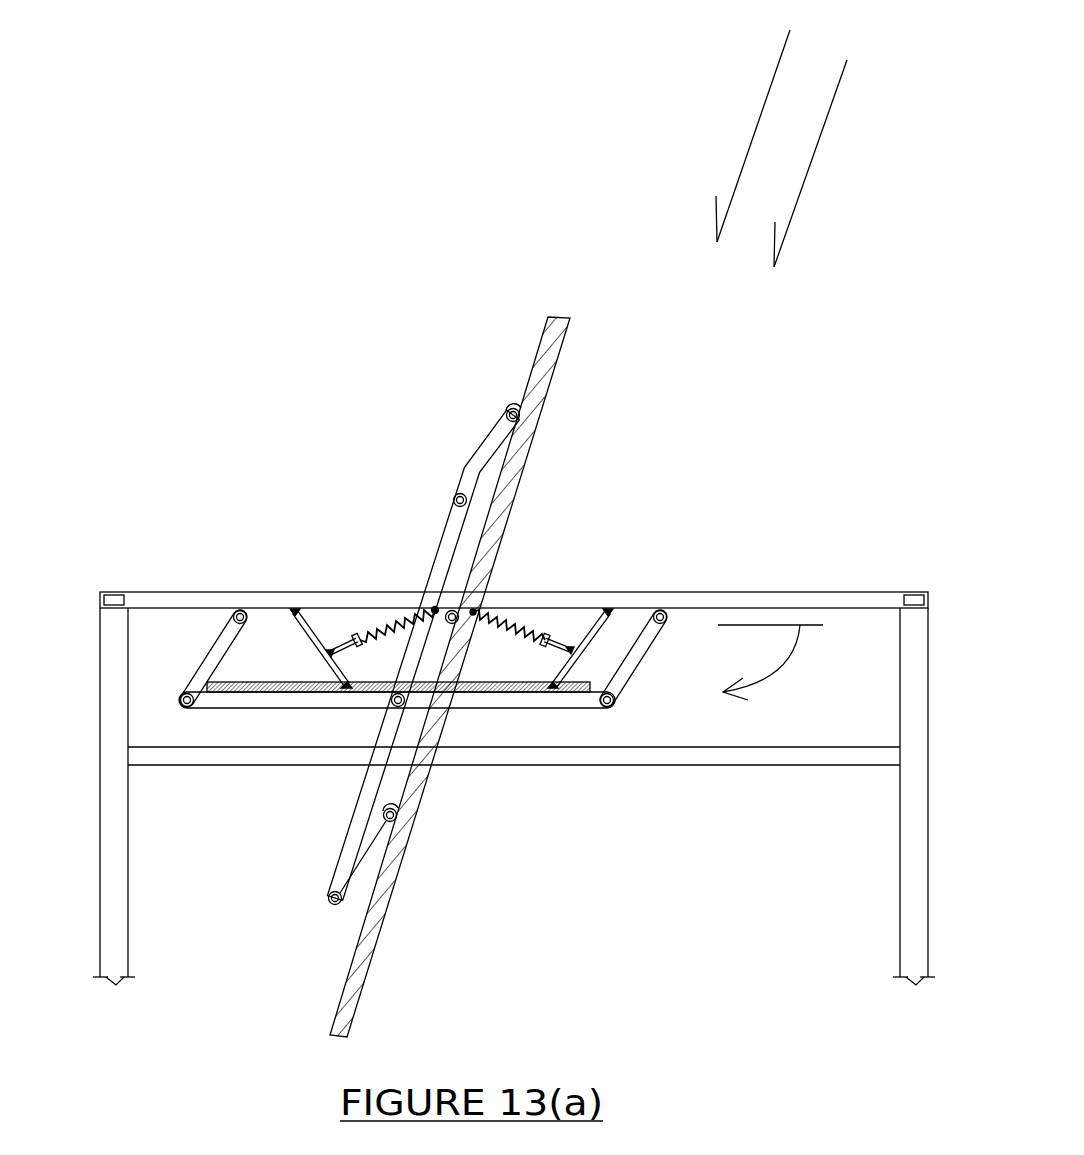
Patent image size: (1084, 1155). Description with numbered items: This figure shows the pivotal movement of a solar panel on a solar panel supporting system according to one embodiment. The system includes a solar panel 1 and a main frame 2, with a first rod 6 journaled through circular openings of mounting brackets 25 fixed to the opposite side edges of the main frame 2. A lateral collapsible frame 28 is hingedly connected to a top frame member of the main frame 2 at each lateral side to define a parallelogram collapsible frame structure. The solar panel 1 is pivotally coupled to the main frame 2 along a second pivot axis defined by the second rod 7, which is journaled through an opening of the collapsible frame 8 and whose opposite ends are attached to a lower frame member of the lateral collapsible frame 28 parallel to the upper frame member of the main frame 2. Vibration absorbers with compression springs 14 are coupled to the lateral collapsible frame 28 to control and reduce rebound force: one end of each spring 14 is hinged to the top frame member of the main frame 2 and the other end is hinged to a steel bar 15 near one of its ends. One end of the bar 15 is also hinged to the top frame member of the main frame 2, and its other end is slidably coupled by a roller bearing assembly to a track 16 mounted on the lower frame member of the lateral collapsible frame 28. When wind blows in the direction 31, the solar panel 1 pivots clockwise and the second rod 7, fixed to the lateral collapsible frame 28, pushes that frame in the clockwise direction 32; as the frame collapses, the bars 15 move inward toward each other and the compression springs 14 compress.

The solar panel 1 is at (530, 448).
The main frame 2 is at (750, 597).
The first rod 6 is at (447, 623).
The second rod 7 is at (395, 707).
The collapsible frame 8 is at (473, 465).
The compression spring 14 is at (500, 628).
The bar 15 is at (303, 640).
The track 16 is at (507, 692).
The mounting bracket 25 is at (433, 607).
The lateral collapsible frame 28 is at (652, 632).
The wind direction 31 is at (810, 170).
The clockwise direction 32 is at (777, 672).